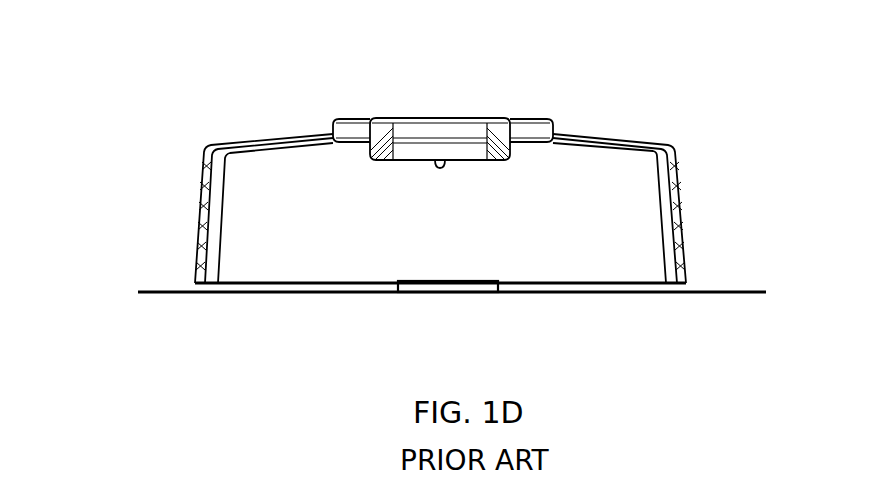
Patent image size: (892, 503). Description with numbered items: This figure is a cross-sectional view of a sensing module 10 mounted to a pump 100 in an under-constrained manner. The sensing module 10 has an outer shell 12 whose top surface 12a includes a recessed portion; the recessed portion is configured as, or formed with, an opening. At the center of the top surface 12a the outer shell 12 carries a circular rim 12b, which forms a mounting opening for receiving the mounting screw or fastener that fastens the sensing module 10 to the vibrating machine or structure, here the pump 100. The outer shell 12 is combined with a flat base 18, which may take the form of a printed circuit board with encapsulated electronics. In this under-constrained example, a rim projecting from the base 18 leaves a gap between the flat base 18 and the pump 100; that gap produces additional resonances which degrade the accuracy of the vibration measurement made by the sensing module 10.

The sensing module 10 is at (624, 91).
The outer shell 12 is at (203, 165).
The top surface 12a is at (614, 135).
The circular rim 12b is at (497, 122).
The base 18 is at (481, 309).
The pump 100 is at (175, 292).